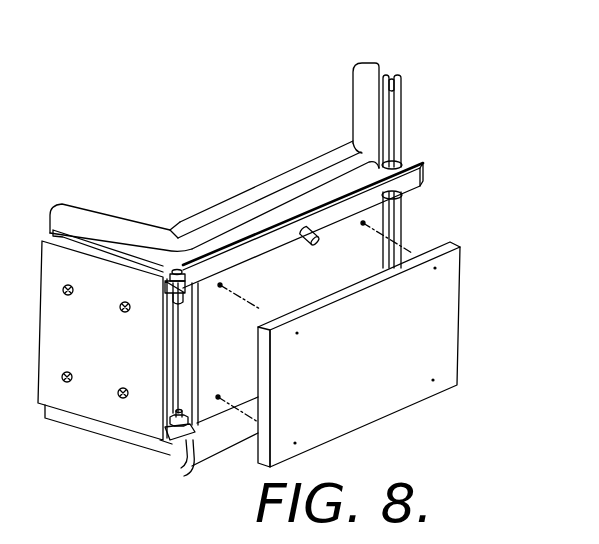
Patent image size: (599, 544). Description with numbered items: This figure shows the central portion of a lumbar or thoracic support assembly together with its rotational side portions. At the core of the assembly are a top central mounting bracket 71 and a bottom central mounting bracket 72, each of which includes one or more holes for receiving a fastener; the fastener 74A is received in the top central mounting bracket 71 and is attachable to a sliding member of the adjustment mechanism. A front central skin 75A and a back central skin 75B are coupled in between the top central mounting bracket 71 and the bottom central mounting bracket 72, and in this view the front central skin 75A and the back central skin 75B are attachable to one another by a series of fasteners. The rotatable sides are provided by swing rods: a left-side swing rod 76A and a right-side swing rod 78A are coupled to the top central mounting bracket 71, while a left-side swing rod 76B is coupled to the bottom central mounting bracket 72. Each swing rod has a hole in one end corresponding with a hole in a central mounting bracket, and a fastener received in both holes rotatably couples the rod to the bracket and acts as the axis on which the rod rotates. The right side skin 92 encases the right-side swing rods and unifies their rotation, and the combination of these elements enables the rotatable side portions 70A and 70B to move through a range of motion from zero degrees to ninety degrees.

The rotatable side portion 70A is at (353, 98).
The rotatable side portion 70B is at (121, 211).
The top central mounting bracket 71 is at (257, 247).
The bottom central mounting bracket 72 is at (198, 458).
The fastener 74A is at (313, 231).
The front central skin 75A is at (337, 280).
The back central skin 75B is at (378, 421).
The left-side swing rod 76A is at (90, 248).
The left-side swing rod 76B is at (178, 452).
The right-side swing rod 78A is at (393, 122).
The right side skin 92 is at (390, 77).